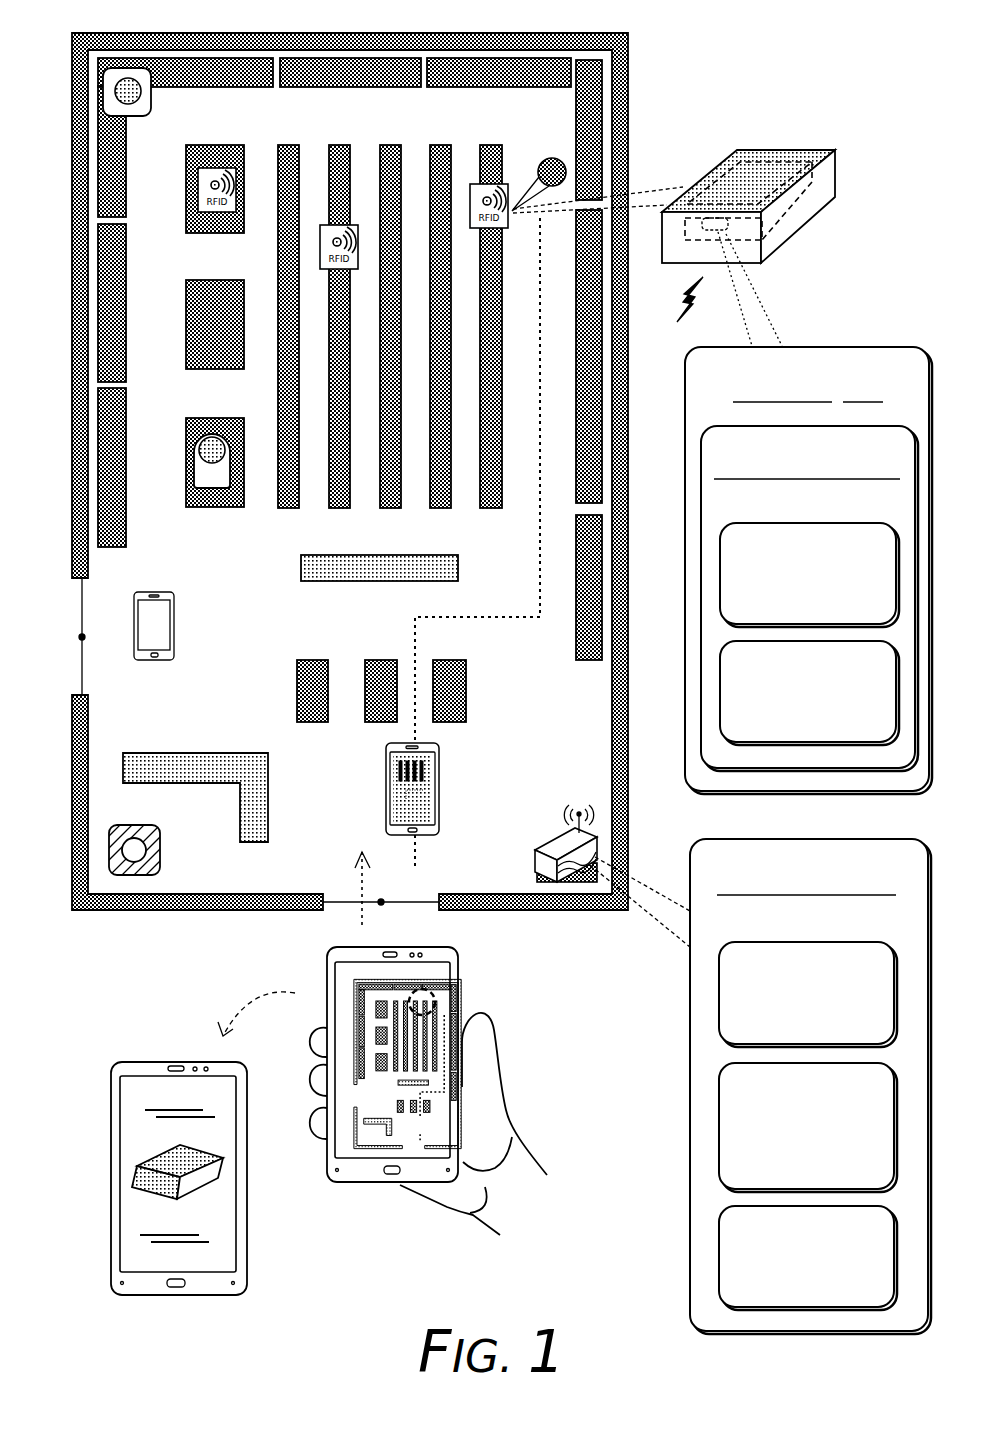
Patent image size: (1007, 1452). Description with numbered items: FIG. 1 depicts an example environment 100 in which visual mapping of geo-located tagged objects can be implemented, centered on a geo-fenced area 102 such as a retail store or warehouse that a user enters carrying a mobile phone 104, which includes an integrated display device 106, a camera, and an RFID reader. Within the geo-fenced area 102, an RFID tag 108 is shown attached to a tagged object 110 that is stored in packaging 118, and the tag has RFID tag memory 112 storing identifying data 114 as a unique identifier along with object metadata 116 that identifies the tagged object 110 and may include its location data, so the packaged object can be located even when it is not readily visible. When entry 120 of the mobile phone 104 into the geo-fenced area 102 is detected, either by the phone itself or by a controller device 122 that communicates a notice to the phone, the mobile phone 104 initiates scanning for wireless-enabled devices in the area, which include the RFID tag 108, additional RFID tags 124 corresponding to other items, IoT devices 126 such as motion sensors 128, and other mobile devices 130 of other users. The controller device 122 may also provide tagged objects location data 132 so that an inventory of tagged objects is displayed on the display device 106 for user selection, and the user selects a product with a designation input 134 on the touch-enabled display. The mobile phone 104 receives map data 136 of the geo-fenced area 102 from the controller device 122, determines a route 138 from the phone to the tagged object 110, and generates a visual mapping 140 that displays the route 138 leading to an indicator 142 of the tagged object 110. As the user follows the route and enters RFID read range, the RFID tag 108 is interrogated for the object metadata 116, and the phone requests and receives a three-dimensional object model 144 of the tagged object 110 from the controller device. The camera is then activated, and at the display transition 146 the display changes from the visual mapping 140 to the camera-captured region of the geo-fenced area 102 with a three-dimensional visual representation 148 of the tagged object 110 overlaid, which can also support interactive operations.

The example environment 100 is at (773, 83).
The geo-fenced area 102 is at (628, 137).
The mobile phone 104 is at (309, 1050).
The integrated display device 106 is at (411, 1088).
The RFID tag 108 is at (676, 450).
The tagged object 110 is at (773, 217).
The RFID tag memory 112 is at (789, 508).
The identifying data 114 is at (789, 613).
The object metadata 116 is at (789, 731).
The packaging 118 is at (772, 248).
The entry 120 is at (308, 877).
The controller device 122 is at (789, 923).
The additional RFID tags 124 is at (330, 227).
The IoT devices 126 is at (138, 77).
The motion sensors 128 is at (116, 813).
The other mobile devices 130 is at (138, 690).
The tagged objects location data 132 is at (789, 1178).
The designation input 134 is at (437, 1002).
The map data 136 is at (789, 1033).
The route 138 is at (493, 618).
The visual mapping 140 is at (411, 1045).
The indicator 142 is at (518, 148).
The 3D object model 144 is at (789, 1294).
The display transition 146 is at (175, 1167).
The 3D visual representation 148 is at (207, 1252).